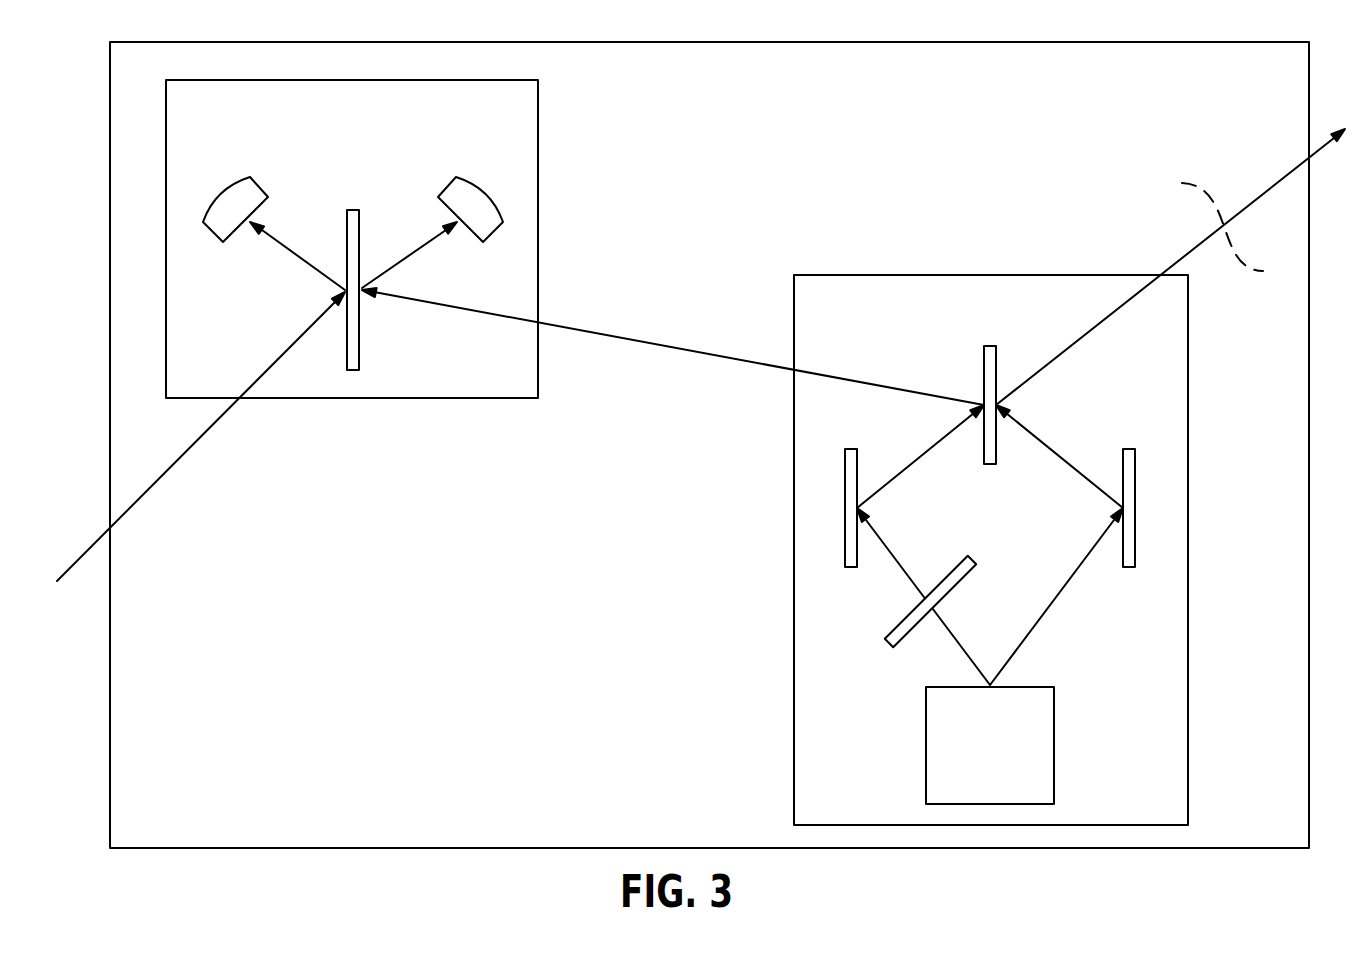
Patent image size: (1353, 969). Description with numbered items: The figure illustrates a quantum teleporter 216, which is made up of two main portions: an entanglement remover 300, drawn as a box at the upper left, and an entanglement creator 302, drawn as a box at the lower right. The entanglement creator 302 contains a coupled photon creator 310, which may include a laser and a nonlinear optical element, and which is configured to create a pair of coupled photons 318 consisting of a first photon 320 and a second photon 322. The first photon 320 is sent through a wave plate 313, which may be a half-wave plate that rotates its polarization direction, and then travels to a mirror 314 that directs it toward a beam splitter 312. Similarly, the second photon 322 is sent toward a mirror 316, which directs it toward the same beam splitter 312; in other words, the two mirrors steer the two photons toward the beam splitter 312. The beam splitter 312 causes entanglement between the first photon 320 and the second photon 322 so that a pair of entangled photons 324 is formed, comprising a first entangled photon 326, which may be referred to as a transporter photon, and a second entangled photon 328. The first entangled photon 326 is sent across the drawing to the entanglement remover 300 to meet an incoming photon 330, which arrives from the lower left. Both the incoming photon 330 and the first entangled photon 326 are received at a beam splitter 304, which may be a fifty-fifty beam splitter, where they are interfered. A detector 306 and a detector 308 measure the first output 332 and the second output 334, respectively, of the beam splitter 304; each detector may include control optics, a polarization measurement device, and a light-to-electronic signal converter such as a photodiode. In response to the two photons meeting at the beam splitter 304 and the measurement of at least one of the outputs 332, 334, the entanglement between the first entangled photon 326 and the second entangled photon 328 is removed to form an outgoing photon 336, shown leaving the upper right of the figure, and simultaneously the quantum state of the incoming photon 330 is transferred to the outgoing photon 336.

The quantum teleporter 216 is at (853, 104).
The entanglement remover 300 is at (540, 222).
The entanglement creator 302 is at (792, 599).
The beam splitter 304 is at (351, 210).
The detector 306 is at (222, 185).
The detector 308 is at (457, 177).
The coupled photon creator 310 is at (1007, 756).
The beam splitter 312 is at (992, 346).
The wave plate 313 is at (944, 568).
The mirror 314 is at (851, 449).
The mirror 316 is at (1131, 449).
The pair of coupled photons 318 is at (909, 609).
The first photon 320 is at (972, 655).
The second photon 322 is at (1065, 592).
The pair of entangled photons 324 is at (962, 370).
The first entangled photon 326 is at (703, 352).
The second entangled photon 328 is at (1187, 252).
The incoming photon 330 is at (162, 478).
The first output 332 is at (286, 243).
The second output 334 is at (416, 243).
The outgoing photon 336 is at (1268, 189).